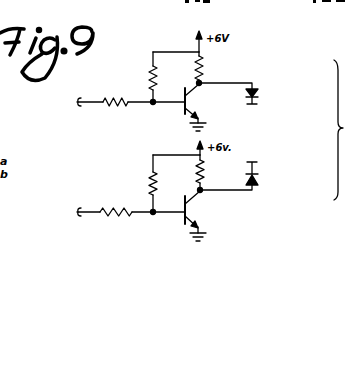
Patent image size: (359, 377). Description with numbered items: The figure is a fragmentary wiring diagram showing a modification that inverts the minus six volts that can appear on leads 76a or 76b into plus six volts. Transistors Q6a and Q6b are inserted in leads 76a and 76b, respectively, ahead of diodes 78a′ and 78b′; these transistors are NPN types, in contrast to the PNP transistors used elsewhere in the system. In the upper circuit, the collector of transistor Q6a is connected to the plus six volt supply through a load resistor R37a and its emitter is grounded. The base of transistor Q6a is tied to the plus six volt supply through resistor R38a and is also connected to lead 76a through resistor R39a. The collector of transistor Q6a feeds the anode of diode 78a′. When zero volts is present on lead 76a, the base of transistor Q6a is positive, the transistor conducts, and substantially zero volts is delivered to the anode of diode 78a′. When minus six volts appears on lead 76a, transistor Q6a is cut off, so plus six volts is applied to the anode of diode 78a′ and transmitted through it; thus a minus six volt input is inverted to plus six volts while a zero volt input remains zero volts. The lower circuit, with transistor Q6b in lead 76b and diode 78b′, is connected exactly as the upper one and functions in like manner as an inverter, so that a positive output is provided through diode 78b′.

The lead 76a is at (92, 101).
The resistor R38a is at (155, 87).
The load resistor R37a is at (203, 67).
The resistor R39a is at (91, 104).
The transistor Q6a is at (198, 102).
The diode 78a′ is at (261, 94).
The lead 76b is at (88, 211).
The transistor Q6b is at (190, 209).
The diode 78b′ is at (262, 183).